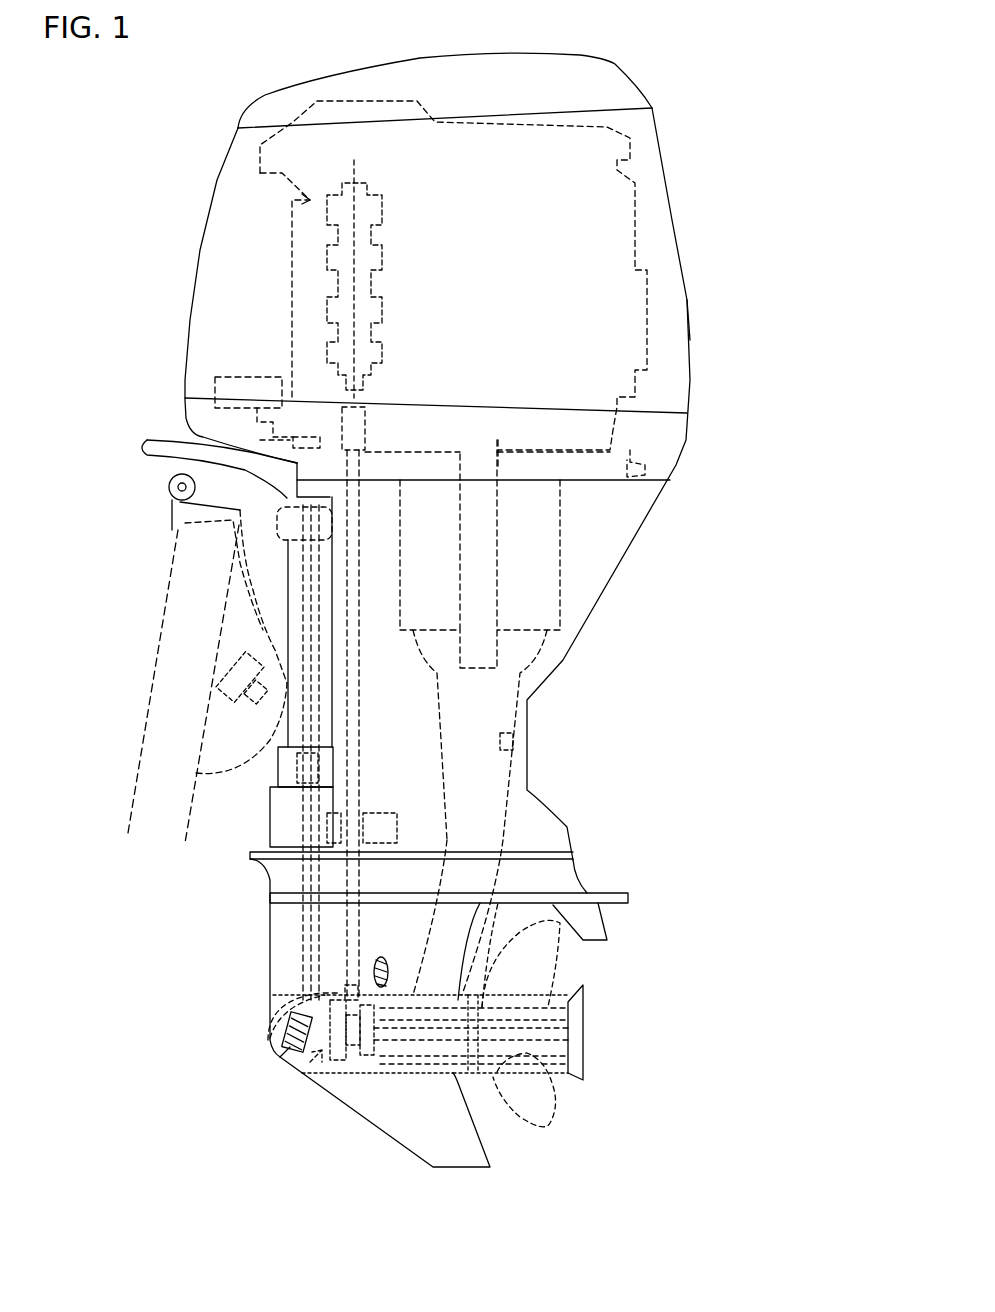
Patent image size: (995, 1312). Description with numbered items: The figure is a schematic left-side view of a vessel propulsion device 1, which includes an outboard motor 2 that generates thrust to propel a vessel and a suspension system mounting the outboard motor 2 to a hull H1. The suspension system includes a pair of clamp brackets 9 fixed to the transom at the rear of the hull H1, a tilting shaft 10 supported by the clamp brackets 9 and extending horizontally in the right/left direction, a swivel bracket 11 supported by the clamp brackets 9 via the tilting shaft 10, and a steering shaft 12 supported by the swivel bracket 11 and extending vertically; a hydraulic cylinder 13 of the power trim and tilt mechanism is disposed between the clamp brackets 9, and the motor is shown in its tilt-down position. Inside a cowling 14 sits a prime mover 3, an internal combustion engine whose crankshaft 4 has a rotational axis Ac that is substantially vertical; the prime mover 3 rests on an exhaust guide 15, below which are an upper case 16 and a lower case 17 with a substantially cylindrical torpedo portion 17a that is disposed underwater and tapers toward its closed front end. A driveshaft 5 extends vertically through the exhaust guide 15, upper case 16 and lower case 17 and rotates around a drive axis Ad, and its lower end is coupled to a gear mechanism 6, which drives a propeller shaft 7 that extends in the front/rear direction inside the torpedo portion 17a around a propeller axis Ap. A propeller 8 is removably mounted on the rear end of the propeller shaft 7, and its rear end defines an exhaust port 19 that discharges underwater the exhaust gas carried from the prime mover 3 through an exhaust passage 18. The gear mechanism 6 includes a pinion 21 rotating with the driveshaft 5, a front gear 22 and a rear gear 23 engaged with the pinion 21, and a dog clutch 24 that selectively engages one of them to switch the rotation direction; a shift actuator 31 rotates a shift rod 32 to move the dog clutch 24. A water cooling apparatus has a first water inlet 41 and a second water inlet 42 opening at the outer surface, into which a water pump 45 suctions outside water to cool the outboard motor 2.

The vessel propulsion device 1 is at (128, 133).
The outboard motor 2 is at (677, 127).
The prime mover 3 is at (640, 230).
The crankshaft 4 is at (383, 245).
The driveshaft 5 is at (367, 713).
The gear mechanism 6 is at (317, 1063).
The propeller shaft 7 is at (423, 1082).
The propeller 8 is at (548, 1112).
The clamp brackets 9 is at (240, 623).
The tilting shaft 10 is at (168, 487).
The swivel bracket 11 is at (253, 573).
The steering shaft 12 is at (287, 728).
The hydraulic cylinder 13 is at (225, 660).
The cowling 14 is at (687, 318).
The exhaust guide 15 is at (640, 465).
The upper case 16 is at (597, 556).
The lower case 17 is at (567, 868).
The torpedo portion 17a is at (282, 1058).
The exhaust passage 18 is at (527, 737).
The exhaust port 19 is at (587, 1013).
The pinion 21 is at (337, 990).
The front gear 22 is at (330, 1077).
The rear gear 23 is at (380, 1077).
The dog clutch 24 is at (355, 1075).
The shift actuator 31 is at (253, 376).
The shift rod 32 is at (303, 940).
The first water inlet 41 is at (280, 1030).
The second water inlet 42 is at (380, 953).
The water pump 45 is at (330, 825).
The rotational axis of the crankshaft Ac is at (357, 170).
The drive axis Ad is at (327, 872).
The propeller axis Ap is at (567, 1050).
The hull H1 is at (150, 702).